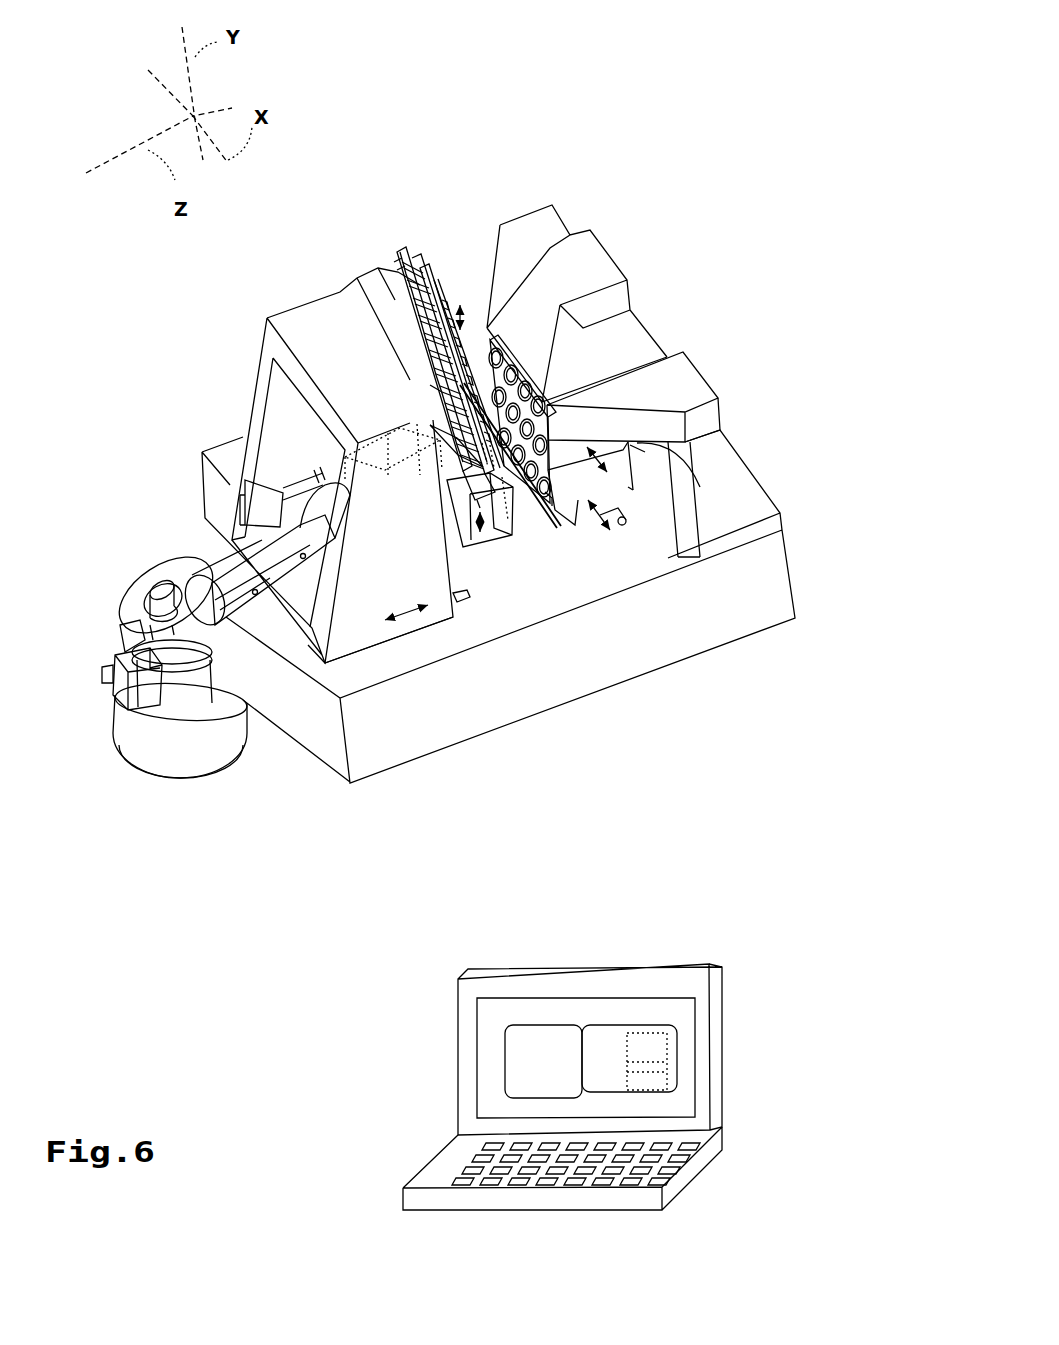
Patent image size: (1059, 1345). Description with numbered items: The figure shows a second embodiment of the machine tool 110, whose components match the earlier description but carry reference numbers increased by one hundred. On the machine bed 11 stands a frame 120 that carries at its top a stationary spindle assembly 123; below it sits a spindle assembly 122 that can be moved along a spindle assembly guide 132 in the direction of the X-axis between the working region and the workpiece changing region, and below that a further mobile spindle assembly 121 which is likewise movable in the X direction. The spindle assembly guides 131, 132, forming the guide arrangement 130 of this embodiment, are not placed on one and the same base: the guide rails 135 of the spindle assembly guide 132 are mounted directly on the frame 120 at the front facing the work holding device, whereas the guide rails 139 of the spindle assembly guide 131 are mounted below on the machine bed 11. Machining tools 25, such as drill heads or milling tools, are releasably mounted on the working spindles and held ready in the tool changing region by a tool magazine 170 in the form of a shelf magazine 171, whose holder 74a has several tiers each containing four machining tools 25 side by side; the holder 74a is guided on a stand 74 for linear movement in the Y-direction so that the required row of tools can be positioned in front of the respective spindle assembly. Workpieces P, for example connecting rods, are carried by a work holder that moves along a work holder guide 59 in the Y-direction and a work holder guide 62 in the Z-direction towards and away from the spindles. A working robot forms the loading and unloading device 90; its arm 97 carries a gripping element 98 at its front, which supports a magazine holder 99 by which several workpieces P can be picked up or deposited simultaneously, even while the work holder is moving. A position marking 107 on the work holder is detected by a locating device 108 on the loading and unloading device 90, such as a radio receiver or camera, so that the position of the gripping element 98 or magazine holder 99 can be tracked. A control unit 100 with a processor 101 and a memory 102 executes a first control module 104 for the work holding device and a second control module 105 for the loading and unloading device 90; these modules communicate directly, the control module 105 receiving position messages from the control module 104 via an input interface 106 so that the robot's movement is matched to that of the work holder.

The machine bed 11 is at (328, 762).
The machining tools 25 is at (433, 258).
The work holder guide 59 is at (445, 498).
The work holder guide 62 is at (467, 603).
The stand 74 is at (352, 295).
The holder 74a is at (447, 293).
The loading and unloading device 90 is at (138, 590).
The arm 97 is at (333, 473).
The gripping element 98 is at (417, 427).
The magazine holder 99 is at (477, 503).
The control unit 100 is at (648, 933).
The processor 101 is at (527, 1040).
The memory 102 is at (593, 1063).
The first control module 104 is at (642, 1035).
The second control module 105 is at (677, 1080).
The input interface 106 is at (663, 1063).
The position marking 107 is at (505, 512).
The locating device 108 is at (390, 442).
The machine tool 110 is at (745, 152).
The frame 120 is at (745, 455).
The spindle assembly 121 is at (558, 507).
The spindle assembly 122 is at (570, 447).
The stationary spindle assembly 123 is at (583, 360).
The slide 130 is at (482, 618).
The spindle assembly guide 131 is at (638, 530).
The spindle assembly guide 132 is at (644, 464).
The guide rails 135 is at (689, 473).
The guide rails 139 is at (623, 520).
The tool magazine 170 is at (392, 248).
The shelf magazine 171 is at (388, 268).
The workpieces P is at (447, 428).